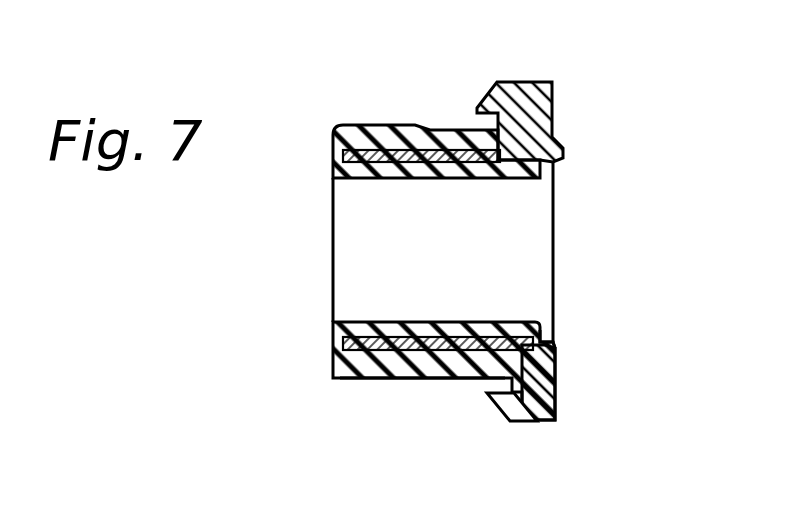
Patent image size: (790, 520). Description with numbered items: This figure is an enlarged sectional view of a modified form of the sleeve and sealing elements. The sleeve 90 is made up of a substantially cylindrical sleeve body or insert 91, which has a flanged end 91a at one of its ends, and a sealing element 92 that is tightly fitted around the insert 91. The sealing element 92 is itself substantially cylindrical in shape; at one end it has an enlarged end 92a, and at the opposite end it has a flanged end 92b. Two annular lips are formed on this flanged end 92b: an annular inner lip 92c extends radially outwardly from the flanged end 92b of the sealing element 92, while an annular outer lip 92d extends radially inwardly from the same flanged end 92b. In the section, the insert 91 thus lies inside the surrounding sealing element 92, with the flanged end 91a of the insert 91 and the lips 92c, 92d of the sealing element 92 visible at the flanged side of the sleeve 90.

The sleeve 90 is at (553, 70).
The sleeve body or insert 91 is at (344, 156).
The flanged end 91a is at (553, 92).
The sealing element 92 is at (462, 126).
The enlarged end 92a is at (382, 378).
The flanged end 92b is at (548, 420).
The annular inner lip 92c is at (557, 346).
The annular outer lip 92d is at (492, 406).